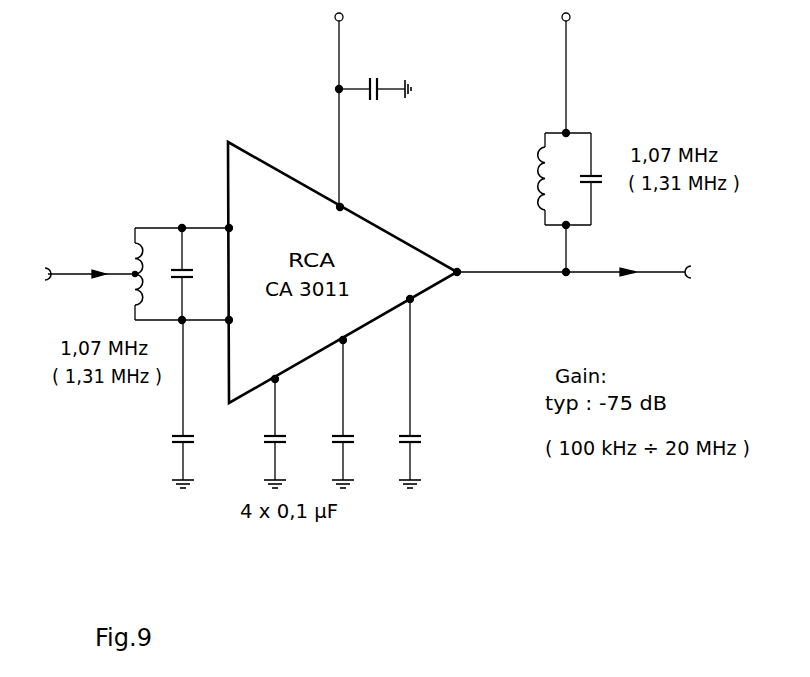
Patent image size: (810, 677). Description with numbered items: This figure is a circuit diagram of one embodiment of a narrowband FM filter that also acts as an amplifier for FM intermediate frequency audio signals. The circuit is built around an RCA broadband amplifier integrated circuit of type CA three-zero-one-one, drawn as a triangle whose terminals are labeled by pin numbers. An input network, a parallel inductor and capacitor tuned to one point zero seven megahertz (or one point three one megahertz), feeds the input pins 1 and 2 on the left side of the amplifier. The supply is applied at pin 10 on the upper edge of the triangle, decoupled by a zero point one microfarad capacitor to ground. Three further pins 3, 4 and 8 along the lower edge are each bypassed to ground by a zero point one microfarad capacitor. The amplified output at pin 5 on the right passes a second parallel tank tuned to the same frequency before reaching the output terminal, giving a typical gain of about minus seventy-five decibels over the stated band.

The amplifier input pin 1 is at (221, 215).
The amplifier input pin 2 is at (221, 309).
The amplifier pin 3 (bypass capacitor) 3 is at (280, 432).
The amplifier pin 4 (bypass capacitor) 4 is at (348, 413).
The amplifier output pin 5 is at (572, 260).
The amplifier pin 8 (bypass capacitor) 8 is at (416, 392).
The amplifier supply pin 10 is at (373, 112).